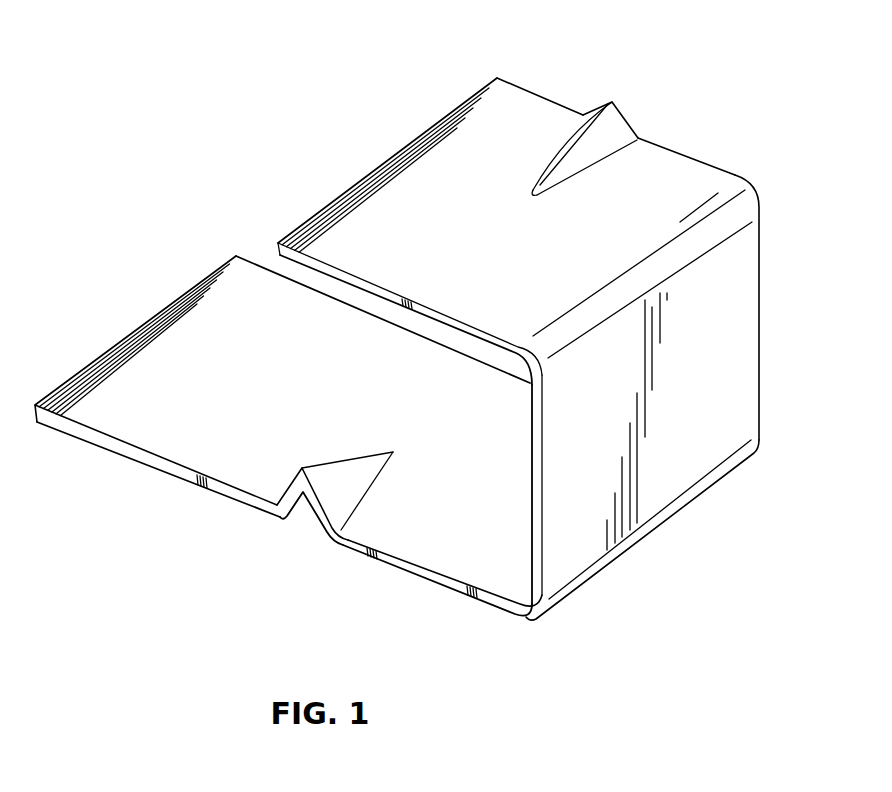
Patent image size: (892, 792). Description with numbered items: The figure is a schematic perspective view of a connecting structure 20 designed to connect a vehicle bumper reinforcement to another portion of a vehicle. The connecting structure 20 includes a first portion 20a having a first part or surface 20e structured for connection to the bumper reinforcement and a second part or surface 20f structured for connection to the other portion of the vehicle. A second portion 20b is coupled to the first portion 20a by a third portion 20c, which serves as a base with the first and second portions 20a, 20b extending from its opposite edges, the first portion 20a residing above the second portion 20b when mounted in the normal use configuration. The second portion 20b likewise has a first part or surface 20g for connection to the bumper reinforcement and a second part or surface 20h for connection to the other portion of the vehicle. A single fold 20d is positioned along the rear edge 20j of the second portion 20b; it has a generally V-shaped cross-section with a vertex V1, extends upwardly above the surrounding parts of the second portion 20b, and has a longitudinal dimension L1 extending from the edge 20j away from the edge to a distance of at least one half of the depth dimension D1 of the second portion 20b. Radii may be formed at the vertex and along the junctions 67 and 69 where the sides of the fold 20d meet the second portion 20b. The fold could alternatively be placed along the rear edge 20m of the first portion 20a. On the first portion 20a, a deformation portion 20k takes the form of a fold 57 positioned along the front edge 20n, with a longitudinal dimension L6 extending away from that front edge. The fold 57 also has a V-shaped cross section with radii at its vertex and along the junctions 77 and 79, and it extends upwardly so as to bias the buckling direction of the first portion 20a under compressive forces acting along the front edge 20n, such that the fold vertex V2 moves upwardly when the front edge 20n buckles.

The connecting structure 20 is at (736, 59).
The first portion 20a is at (677, 168).
The second portion 20b is at (423, 533).
The third portion 20c is at (740, 352).
The fold 20d is at (307, 515).
The first part or surface 20e is at (697, 193).
The second part or surface 20f is at (460, 122).
The first part or surface 20g is at (440, 587).
The second part or surface 20h is at (103, 412).
The rear edge 20j is at (115, 453).
The deformation portion 20k is at (638, 118).
The rear edge 20m is at (335, 262).
The front edge 20n is at (535, 92).
The fold 57 is at (588, 132).
The junction 67 is at (278, 505).
The junction 69 is at (333, 500).
The junction 77 is at (538, 187).
The junction 79 is at (580, 177).
The depth dimension D1 is at (37, 299).
The longitudinal dimension L1 is at (393, 353).
The longitudinal dimension L6 is at (532, 172).
The fold vertex V1 is at (298, 463).
The fold vertex V2 is at (615, 100).